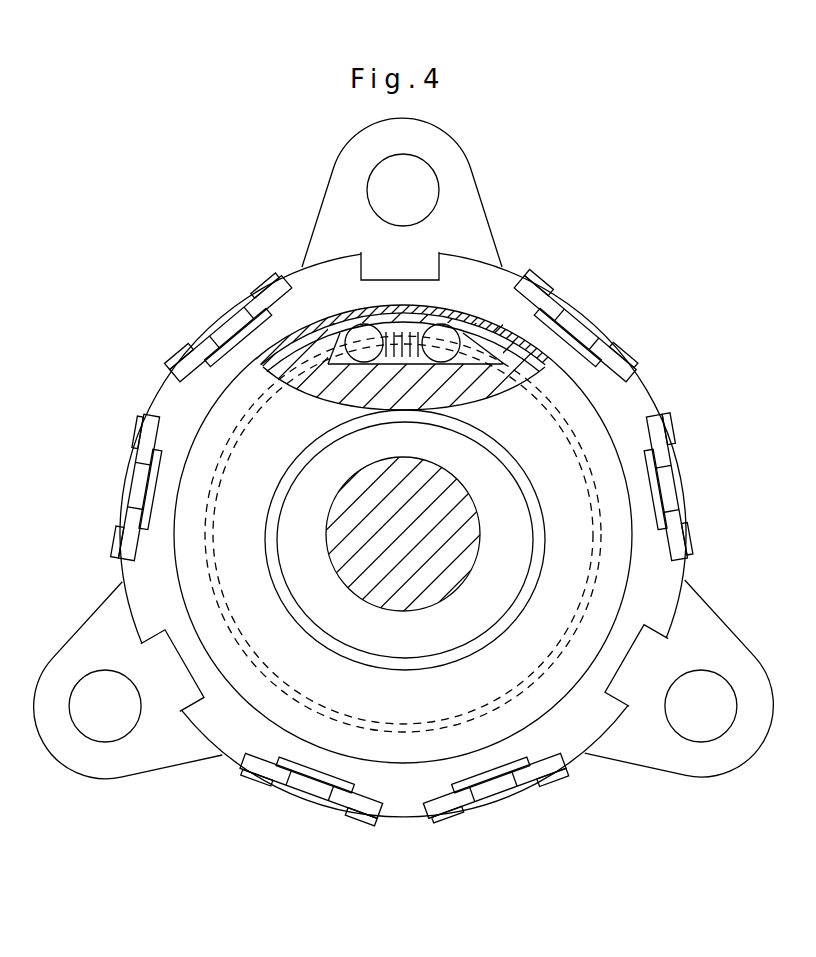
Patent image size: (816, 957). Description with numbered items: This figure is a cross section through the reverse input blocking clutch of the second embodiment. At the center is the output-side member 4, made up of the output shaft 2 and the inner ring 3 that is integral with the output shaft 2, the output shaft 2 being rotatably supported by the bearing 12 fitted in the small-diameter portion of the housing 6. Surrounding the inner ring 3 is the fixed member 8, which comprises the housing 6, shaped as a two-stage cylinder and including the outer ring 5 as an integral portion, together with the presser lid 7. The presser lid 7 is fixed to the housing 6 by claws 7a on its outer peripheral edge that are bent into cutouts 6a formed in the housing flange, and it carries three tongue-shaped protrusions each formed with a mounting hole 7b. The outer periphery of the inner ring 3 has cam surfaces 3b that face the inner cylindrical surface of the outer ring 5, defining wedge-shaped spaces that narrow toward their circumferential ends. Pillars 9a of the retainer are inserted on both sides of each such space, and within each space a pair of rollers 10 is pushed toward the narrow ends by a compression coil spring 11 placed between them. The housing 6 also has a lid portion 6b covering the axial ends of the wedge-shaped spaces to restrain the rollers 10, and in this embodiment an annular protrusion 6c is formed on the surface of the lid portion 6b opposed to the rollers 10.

The output shaft 2 is at (358, 527).
The inner ring 3 is at (345, 385).
The cam surfaces 3b is at (293, 340).
The output-side member 4 is at (76, 370).
The outer ring 5 is at (252, 312).
The housing 6 is at (509, 268).
The cutouts 6a is at (485, 800).
The lid portion 6b is at (588, 420).
The annular protrusion 6c is at (634, 358).
The presser lid 7 is at (478, 150).
The claws 7a is at (497, 792).
The mounting hole 7b is at (395, 168).
The fixed member 8 is at (559, 128).
The pillars 9a is at (465, 348).
The rollers 10 is at (359, 330).
The springs 11 is at (410, 357).
The bearing 12 is at (478, 607).